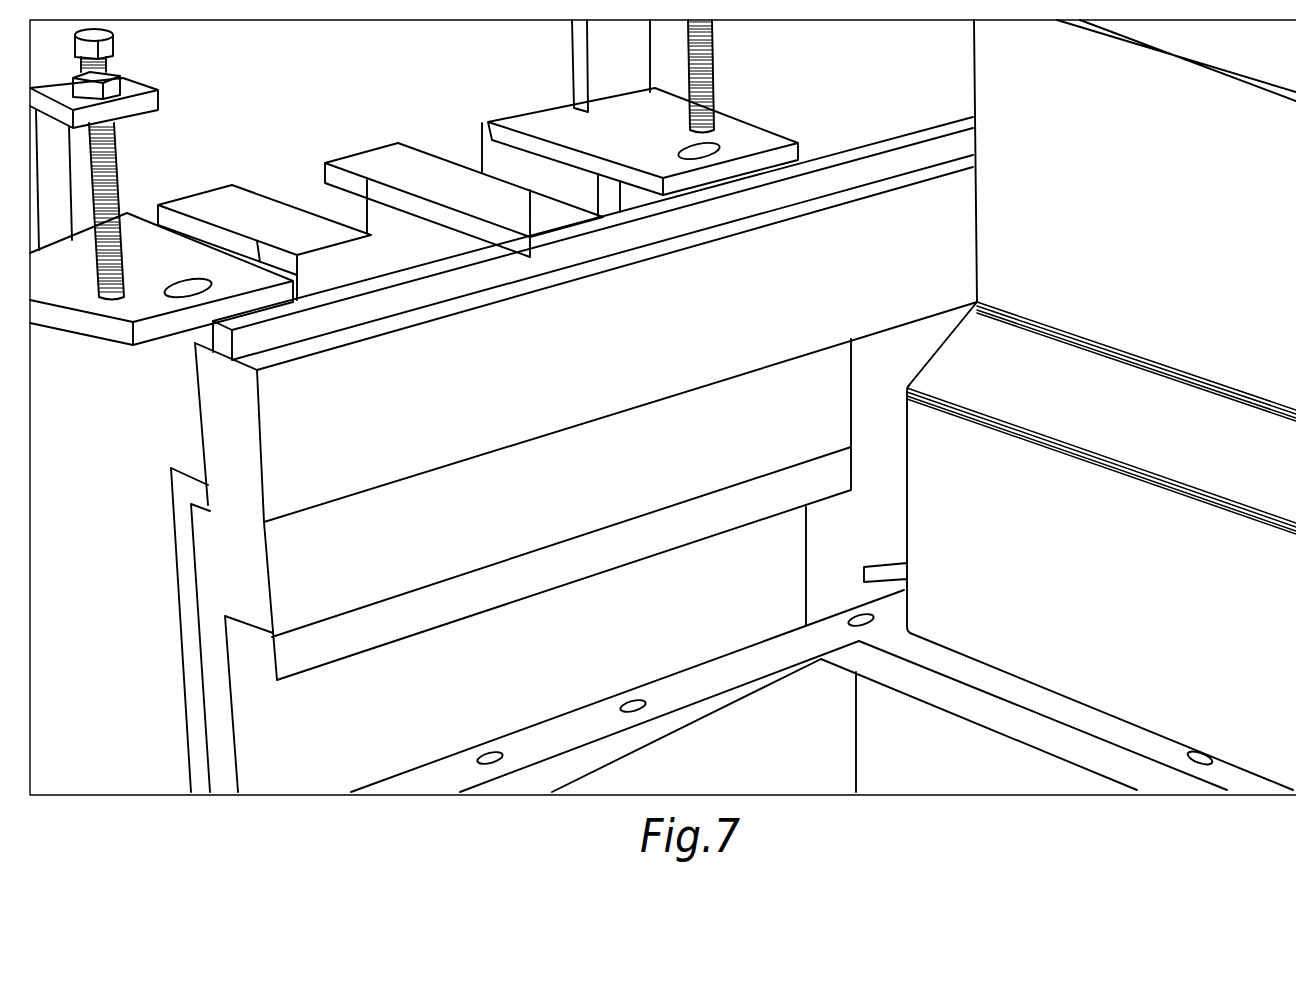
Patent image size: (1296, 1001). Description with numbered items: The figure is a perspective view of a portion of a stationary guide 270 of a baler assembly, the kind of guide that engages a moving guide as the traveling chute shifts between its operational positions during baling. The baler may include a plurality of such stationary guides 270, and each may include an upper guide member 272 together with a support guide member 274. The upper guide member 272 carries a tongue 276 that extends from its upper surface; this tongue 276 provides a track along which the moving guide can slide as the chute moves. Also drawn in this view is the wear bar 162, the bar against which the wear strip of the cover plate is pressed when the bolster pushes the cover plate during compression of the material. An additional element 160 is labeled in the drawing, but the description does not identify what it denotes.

The vertical angle bracket 160 is at (223, 550).
The wear bar 162 is at (368, 629).
The stationary guide 270 is at (180, 429).
The upper guide member 272 is at (207, 394).
The support guide member 274 is at (885, 434).
The tongue 276 is at (410, 275).